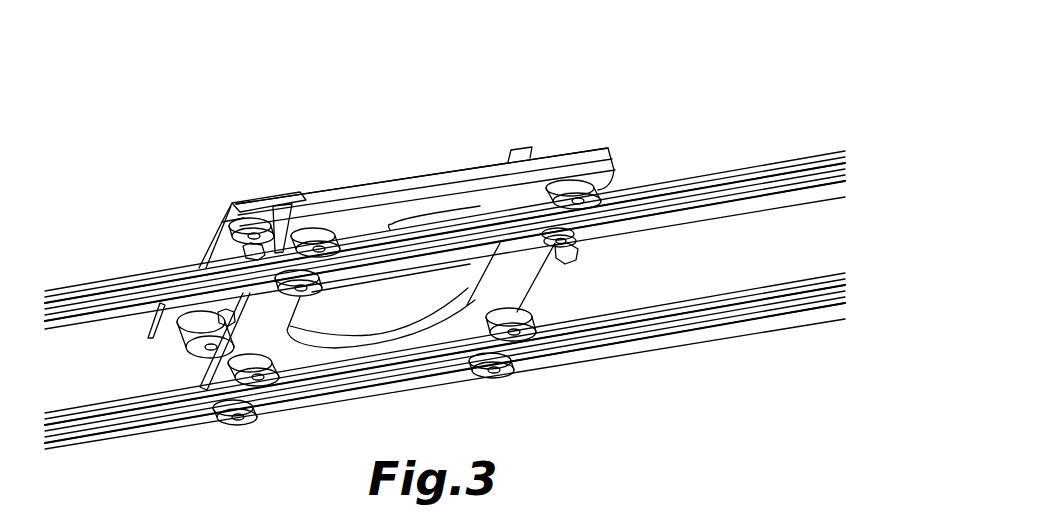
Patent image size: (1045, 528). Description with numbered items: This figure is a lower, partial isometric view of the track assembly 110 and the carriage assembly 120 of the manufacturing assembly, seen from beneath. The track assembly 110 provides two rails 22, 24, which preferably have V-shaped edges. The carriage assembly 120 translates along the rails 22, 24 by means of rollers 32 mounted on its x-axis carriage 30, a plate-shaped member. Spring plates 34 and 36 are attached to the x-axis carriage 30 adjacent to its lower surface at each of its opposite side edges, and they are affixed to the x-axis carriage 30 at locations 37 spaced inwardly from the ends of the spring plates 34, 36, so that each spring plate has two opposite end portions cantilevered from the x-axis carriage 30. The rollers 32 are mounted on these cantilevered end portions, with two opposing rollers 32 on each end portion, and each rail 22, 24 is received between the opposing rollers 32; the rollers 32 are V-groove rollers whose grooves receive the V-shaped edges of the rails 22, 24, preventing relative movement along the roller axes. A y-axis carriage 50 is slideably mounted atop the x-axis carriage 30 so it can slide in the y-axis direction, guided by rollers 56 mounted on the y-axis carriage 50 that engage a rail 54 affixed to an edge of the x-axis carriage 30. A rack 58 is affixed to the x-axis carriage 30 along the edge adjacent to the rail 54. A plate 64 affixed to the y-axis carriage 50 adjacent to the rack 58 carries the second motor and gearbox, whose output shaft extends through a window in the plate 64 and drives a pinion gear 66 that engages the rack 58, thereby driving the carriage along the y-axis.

The track assembly 110 is at (839, 108).
The carriage assembly 120 is at (486, 53).
The rail 22 is at (743, 313).
The rail 24 is at (798, 166).
The x-axis carriage 30 is at (520, 168).
The rollers 32 is at (322, 236).
The spring plate 34 is at (428, 338).
The spring plate 36 is at (497, 203).
The locations 37 is at (478, 207).
The y-axis carriage 50 is at (252, 204).
The rail 54 is at (275, 217).
The rollers 56 is at (230, 237).
The rack 58 is at (197, 377).
The plate 64 is at (155, 330).
The pinion gear 66 is at (184, 347).